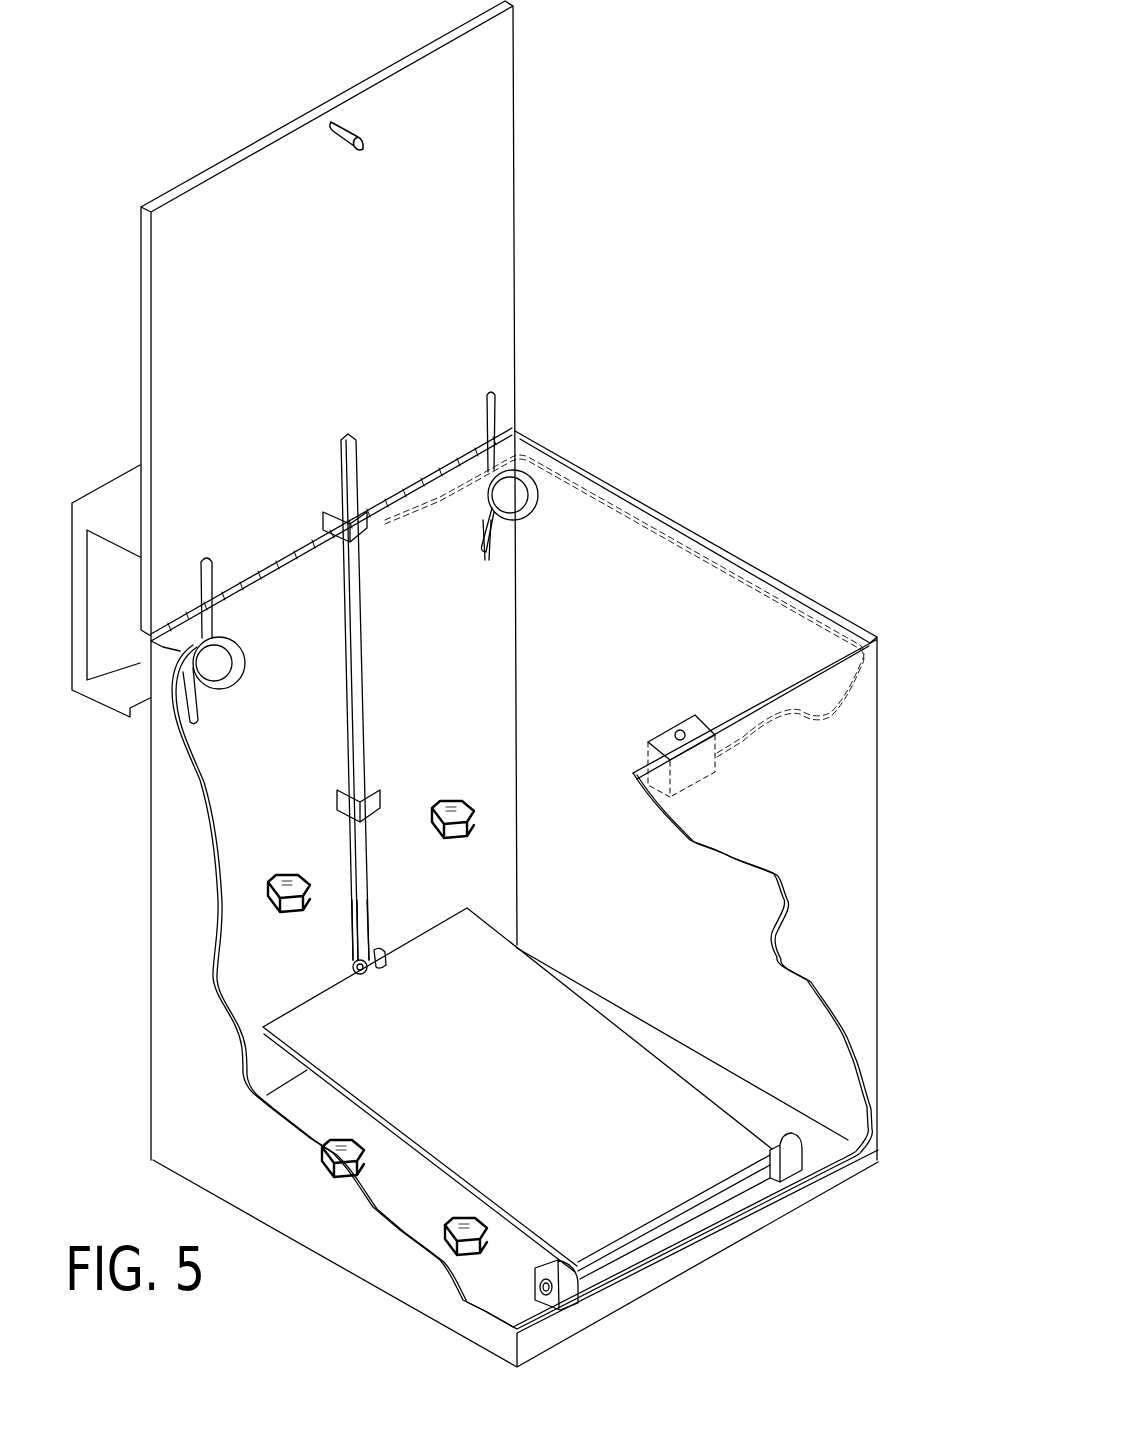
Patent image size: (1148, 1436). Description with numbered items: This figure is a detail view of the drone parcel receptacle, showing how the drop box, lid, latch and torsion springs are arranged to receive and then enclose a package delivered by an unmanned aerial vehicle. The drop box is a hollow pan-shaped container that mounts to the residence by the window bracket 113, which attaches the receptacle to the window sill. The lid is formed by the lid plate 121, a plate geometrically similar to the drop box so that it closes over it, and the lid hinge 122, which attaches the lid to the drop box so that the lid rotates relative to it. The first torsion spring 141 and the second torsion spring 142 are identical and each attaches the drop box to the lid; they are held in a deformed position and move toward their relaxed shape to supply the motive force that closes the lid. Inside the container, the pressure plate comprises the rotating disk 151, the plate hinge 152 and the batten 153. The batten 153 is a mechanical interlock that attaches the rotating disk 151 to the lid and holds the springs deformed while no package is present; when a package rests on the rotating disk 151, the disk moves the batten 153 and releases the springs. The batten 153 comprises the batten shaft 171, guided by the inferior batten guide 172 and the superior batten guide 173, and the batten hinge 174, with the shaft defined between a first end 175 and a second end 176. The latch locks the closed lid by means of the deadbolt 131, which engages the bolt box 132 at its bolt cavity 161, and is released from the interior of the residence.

The window bracket 113 is at (84, 697).
The lid plate 121 is at (480, 183).
The lid hinge 122 is at (515, 428).
The deadbolt 131 is at (334, 129).
The bolt box 132 is at (697, 773).
The first torsion spring 141 is at (222, 696).
The second torsion spring 142 is at (520, 523).
The rotating disk 151 is at (563, 1040).
The plate hinge 152 is at (793, 1153).
The batten 153 is at (339, 355).
The bolt cavity 161 is at (678, 733).
The batten shaft 171 is at (373, 927).
The inferior batten guide 172 is at (375, 805).
The superior batten guide 173 is at (358, 532).
The batten hinge 174 is at (357, 963).
The first end 175 is at (383, 967).
The second end 176 is at (351, 443).